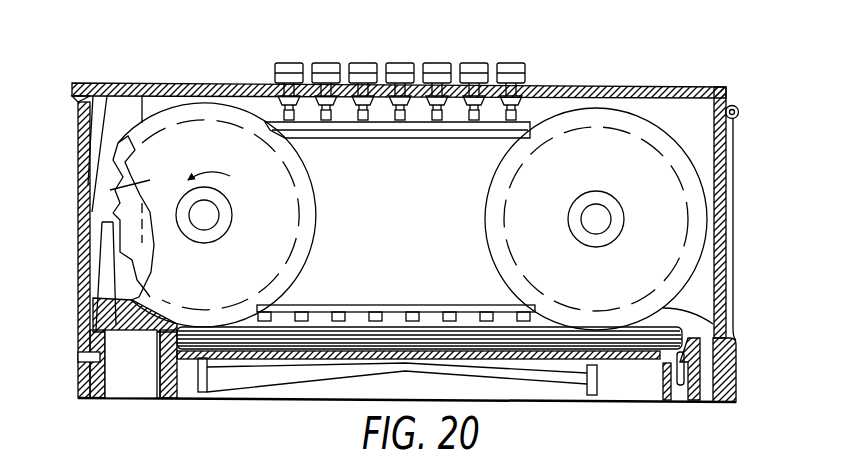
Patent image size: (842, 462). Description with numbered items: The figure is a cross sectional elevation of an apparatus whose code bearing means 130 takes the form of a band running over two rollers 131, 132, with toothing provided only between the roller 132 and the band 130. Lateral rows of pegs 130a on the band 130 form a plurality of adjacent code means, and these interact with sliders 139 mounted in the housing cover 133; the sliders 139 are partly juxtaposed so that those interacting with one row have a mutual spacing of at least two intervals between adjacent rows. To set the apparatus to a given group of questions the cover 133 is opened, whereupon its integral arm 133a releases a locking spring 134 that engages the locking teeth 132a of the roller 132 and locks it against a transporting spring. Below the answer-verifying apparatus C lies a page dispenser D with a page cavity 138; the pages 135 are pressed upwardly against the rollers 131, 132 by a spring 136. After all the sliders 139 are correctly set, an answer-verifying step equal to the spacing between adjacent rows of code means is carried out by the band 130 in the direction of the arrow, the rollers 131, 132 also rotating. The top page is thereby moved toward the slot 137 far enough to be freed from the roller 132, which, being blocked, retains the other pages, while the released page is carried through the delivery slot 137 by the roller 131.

The code bearing means 130 is at (390, 303).
The pegs 130a is at (418, 130).
The roller 131 is at (700, 190).
The roller 132 is at (316, 188).
The locking teeth 132a is at (150, 268).
The housing cover 133 is at (608, 90).
The integral arm 133a is at (125, 185).
The locking spring 134 is at (115, 332).
The pages 135 is at (647, 377).
The spring 136 is at (562, 384).
The delivery slot 137 is at (732, 335).
The page cavity 138 is at (432, 305).
The sliders 139 is at (278, 68).
The answer-verifying apparatus C is at (670, 80).
The page dispenser D is at (251, 406).